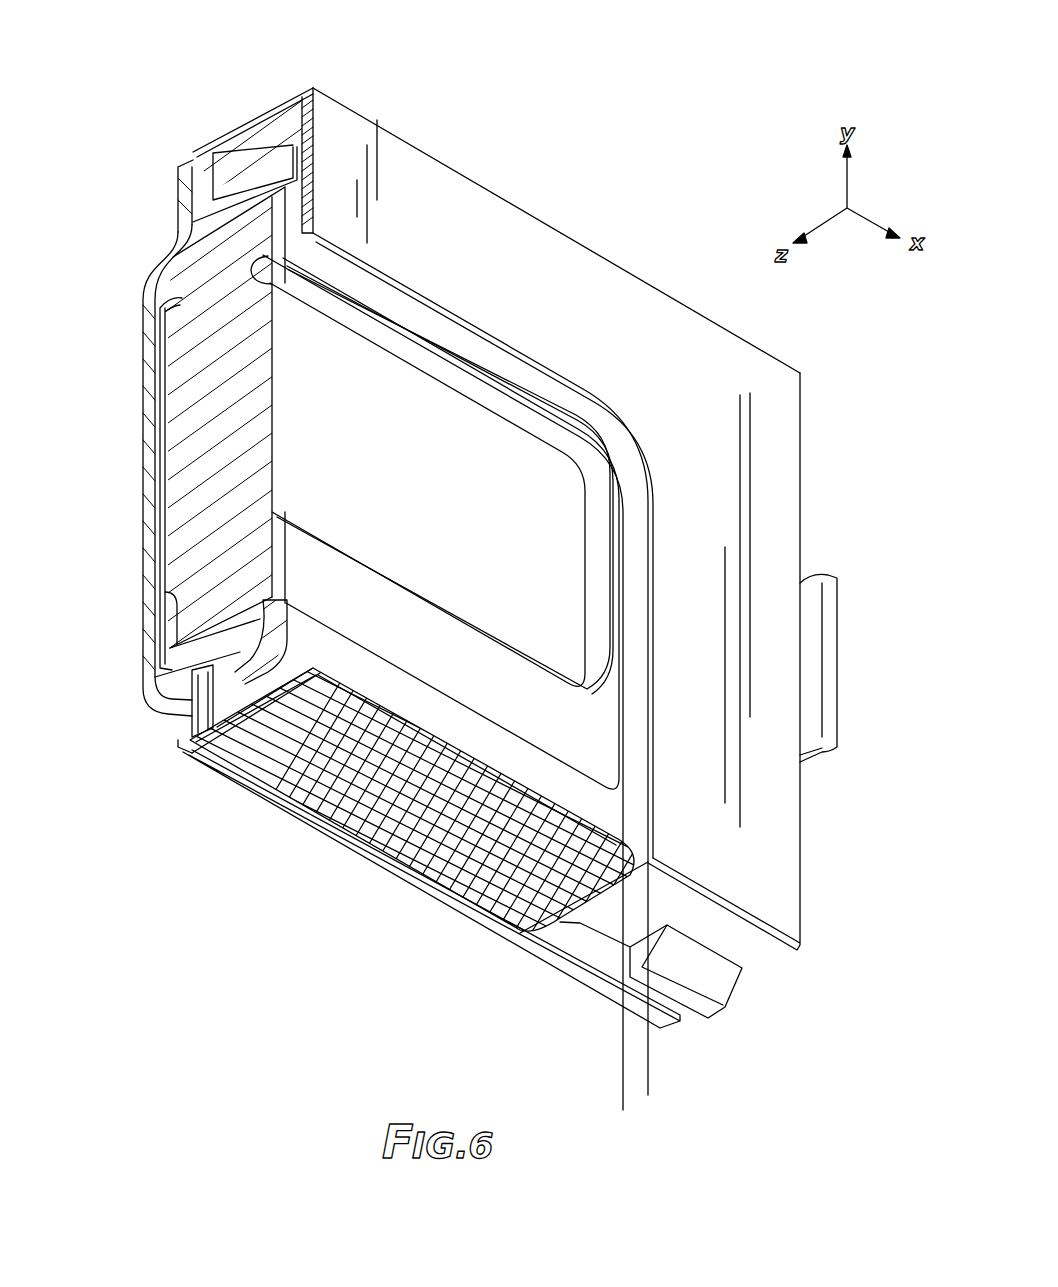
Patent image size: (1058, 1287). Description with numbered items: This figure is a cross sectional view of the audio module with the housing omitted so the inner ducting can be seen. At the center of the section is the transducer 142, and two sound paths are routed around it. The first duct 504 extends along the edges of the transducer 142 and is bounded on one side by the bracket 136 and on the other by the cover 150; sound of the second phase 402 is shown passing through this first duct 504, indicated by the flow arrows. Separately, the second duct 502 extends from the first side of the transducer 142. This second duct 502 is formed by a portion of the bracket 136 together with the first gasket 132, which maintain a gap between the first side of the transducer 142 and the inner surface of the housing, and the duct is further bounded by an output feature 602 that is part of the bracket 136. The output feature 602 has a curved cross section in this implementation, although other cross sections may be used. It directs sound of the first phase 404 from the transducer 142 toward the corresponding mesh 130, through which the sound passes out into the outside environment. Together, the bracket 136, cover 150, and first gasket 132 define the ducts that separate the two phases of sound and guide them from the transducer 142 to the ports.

The mesh 130 is at (428, 867).
The first gasket 132 is at (770, 852).
The bracket 136 is at (287, 125).
The transducer 142 is at (188, 387).
The cover 150 is at (153, 493).
The second phase 402 is at (247, 190).
The first phase 404 is at (395, 487).
The second duct 502 is at (585, 1103).
The first duct 504 is at (260, 178).
The output feature 602 is at (258, 687).